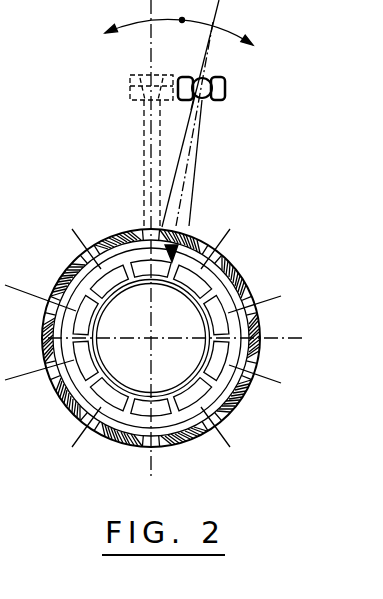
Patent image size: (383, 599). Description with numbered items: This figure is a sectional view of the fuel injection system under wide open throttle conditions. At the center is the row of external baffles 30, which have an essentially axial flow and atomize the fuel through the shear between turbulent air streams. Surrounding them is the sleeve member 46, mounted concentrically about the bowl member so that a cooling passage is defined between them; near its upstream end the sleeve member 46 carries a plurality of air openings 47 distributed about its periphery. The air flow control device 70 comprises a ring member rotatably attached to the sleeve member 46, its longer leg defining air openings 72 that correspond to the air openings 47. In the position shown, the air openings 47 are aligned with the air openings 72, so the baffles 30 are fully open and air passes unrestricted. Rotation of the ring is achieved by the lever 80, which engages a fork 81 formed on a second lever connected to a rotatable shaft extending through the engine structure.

The external baffles 30 is at (72, 268).
The sleeve member 46 is at (230, 402).
The air openings 47 is at (228, 367).
The air flow control device 70 is at (228, 285).
The air openings 72 is at (222, 253).
The lever 80 is at (141, 158).
The fork 81 is at (128, 84).